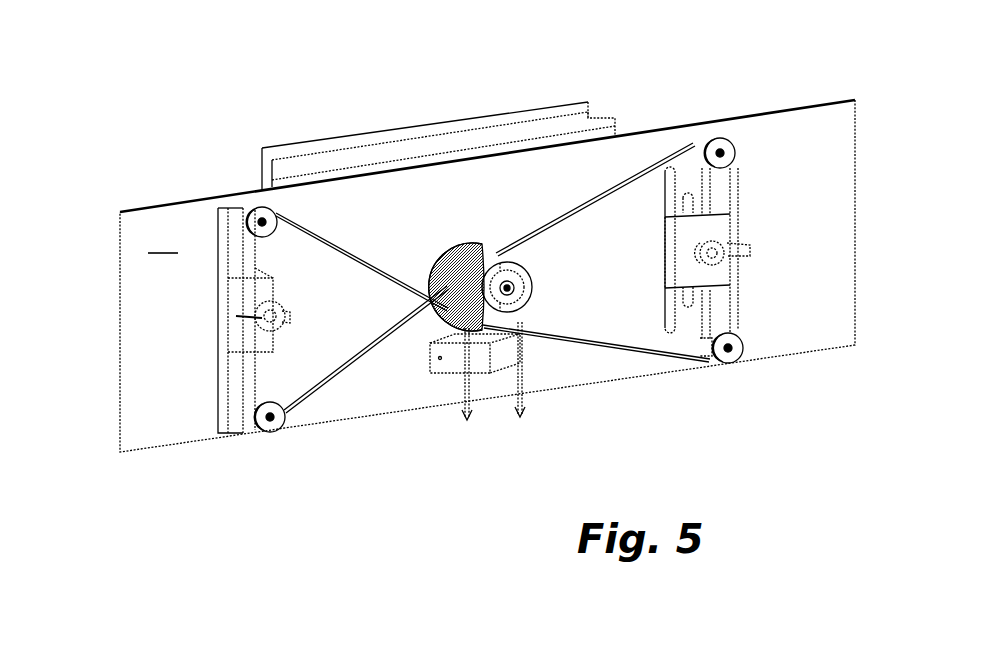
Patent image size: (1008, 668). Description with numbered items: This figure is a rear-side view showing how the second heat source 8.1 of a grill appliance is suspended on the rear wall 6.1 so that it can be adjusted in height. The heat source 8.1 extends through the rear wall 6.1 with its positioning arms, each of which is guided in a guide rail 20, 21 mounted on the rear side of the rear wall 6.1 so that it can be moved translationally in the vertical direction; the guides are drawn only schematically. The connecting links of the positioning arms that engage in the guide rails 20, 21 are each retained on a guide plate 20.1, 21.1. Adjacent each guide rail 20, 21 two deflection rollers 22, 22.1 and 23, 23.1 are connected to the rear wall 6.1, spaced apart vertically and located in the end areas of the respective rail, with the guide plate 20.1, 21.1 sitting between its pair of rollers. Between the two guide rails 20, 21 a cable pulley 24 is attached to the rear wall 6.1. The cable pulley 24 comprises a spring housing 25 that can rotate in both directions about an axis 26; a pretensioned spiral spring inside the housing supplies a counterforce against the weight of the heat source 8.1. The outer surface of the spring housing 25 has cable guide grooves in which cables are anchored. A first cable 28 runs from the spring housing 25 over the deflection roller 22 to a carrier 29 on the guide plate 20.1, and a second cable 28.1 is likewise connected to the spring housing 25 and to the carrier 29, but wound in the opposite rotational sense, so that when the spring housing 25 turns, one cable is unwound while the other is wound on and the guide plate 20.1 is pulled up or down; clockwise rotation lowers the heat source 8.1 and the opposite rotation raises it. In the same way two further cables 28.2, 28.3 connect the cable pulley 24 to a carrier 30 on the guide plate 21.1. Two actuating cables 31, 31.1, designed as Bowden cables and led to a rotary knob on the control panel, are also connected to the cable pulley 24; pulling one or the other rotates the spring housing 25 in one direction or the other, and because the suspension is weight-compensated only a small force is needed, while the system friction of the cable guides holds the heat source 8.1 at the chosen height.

The rear wall 6.1 is at (118, 207).
The second heat source 8.1 is at (333, 136).
The guide rail 20 is at (219, 386).
The guide plate 20.1 is at (261, 292).
The guide rail 21 is at (721, 191).
The guide plate 21.1 is at (713, 276).
The deflection roller 22 is at (260, 203).
The deflection roller 22.1 is at (271, 433).
The deflection roller 23 is at (726, 135).
The deflection roller 23.1 is at (732, 364).
The cable pulley 24 is at (467, 237).
The spring housing 25 is at (509, 254).
The axis 26 is at (516, 289).
The first cable 28 is at (367, 259).
The second cable 28.1 is at (355, 370).
The cable 28.2 is at (603, 185).
The cable 28.3 is at (604, 348).
The carrier 29 is at (238, 317).
The carrier 30 is at (739, 246).
The actuating cable 31 is at (465, 392).
The actuating cable 31.1 is at (524, 388).